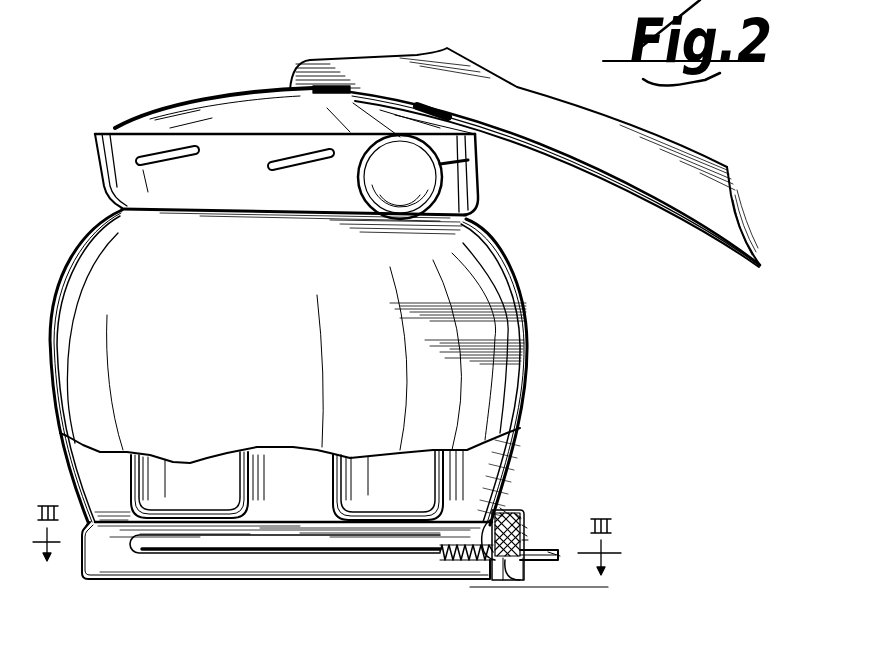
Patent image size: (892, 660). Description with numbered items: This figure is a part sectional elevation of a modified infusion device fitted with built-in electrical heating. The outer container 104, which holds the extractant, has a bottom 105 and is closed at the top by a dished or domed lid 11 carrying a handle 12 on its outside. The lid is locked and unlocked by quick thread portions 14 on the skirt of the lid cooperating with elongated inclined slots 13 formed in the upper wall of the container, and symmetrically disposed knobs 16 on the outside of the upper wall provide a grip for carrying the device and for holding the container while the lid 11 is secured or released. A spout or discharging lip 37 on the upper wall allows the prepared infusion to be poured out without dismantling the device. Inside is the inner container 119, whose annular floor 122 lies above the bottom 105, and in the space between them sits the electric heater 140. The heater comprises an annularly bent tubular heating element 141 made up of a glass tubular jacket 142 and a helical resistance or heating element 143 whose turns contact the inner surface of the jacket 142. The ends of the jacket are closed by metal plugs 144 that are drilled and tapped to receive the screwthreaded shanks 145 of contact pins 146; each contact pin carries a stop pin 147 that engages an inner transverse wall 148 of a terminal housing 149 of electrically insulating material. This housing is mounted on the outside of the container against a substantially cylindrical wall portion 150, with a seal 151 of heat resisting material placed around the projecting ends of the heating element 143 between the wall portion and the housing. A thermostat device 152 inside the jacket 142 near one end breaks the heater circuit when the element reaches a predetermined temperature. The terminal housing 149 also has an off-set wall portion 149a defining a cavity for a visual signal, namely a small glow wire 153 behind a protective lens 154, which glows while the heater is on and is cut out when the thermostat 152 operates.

The lid 11 is at (207, 99).
The handle 12 is at (508, 97).
The inclined slots 13 is at (281, 156).
The quick thread portions 14 is at (300, 156).
The knobs 16 is at (481, 204).
The spout or discharging lip 37 is at (100, 165).
The outer container 104 is at (528, 314).
The bottom of the outer container 105 is at (265, 582).
The inner container 119 is at (498, 470).
The annular floor 122 is at (150, 524).
The electric heater 140 is at (168, 558).
The tubular heating element 141 is at (234, 562).
The tubular jacket 142 is at (316, 551).
The helical resistance or heating element 143 is at (442, 558).
The metal plugs 144 is at (530, 548).
The screwthreaded shanks 145 is at (498, 582).
The contact pins 146 is at (545, 553).
The stop pin 147 is at (530, 537).
The inner transverse wall 148 is at (510, 566).
The terminal housing 149 is at (521, 565).
The off-set wall portion 149a is at (507, 515).
The substantially cylindrical wall portion 150 is at (80, 560).
The seal 151 is at (528, 535).
The thermostat device 152 is at (528, 528).
The glow wire 153 is at (522, 518).
The lens 154 is at (508, 512).